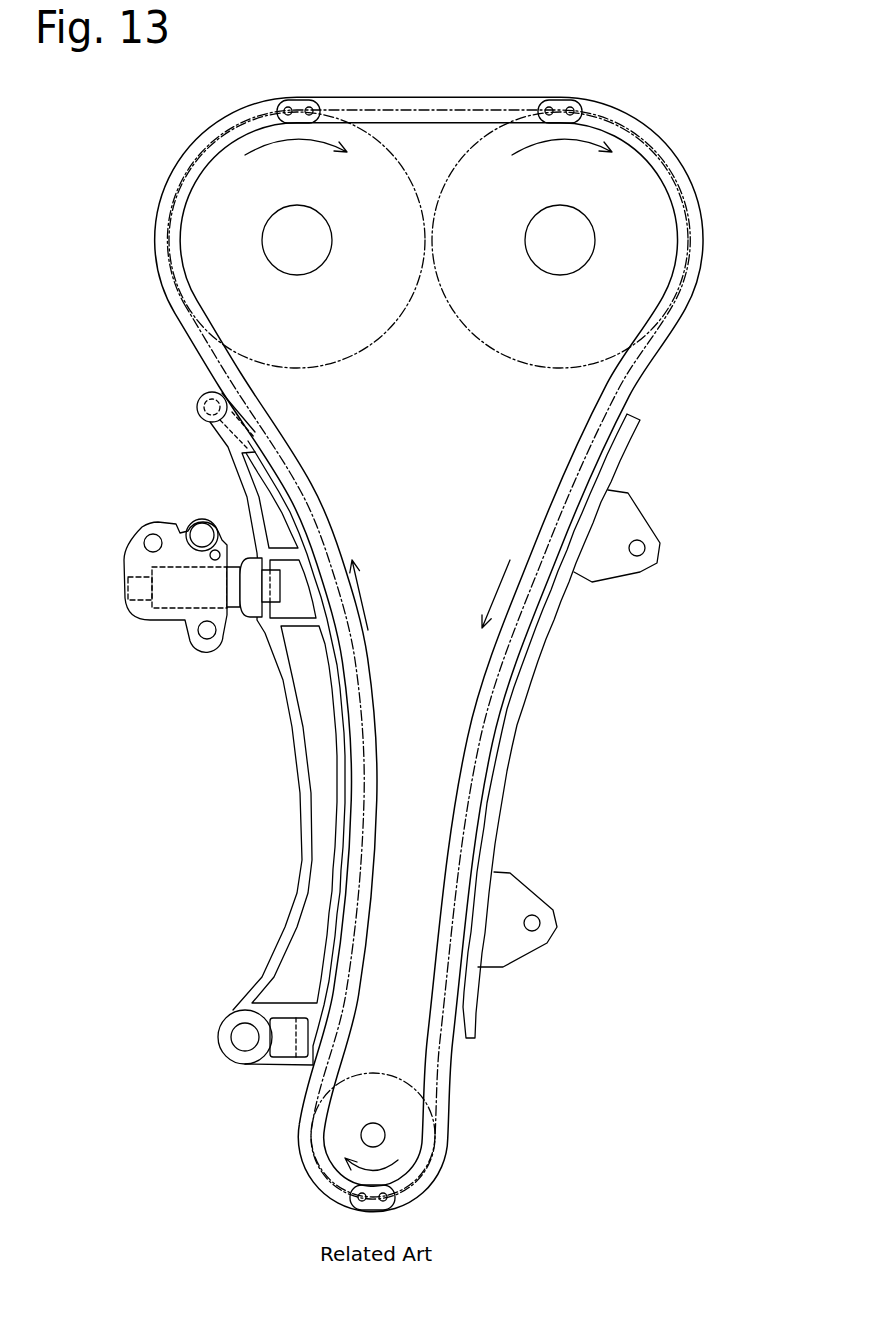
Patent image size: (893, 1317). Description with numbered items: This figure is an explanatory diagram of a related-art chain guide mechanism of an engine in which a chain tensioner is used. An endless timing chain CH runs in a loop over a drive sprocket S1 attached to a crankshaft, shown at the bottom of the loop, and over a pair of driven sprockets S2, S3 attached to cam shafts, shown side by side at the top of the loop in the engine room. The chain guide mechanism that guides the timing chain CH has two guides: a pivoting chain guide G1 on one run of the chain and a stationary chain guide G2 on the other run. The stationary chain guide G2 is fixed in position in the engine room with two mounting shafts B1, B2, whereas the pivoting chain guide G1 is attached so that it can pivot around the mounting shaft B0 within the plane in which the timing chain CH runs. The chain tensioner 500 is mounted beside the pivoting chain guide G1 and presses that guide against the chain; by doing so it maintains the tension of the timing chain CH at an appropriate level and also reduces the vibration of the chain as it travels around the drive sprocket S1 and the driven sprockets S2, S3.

The timing chain CH is at (626, 372).
The drive sprocket S1 is at (386, 1135).
The driven sprocket S2 is at (212, 236).
The driven sprocket S3 is at (634, 223).
The pivoting chain guide G1 is at (310, 926).
The stationary chain guide G2 is at (503, 777).
The mounting shaft B0 is at (238, 1035).
The mounting shaft B1 is at (645, 550).
The mounting shaft B2 is at (541, 923).
The chain tensioner 500 is at (137, 542).